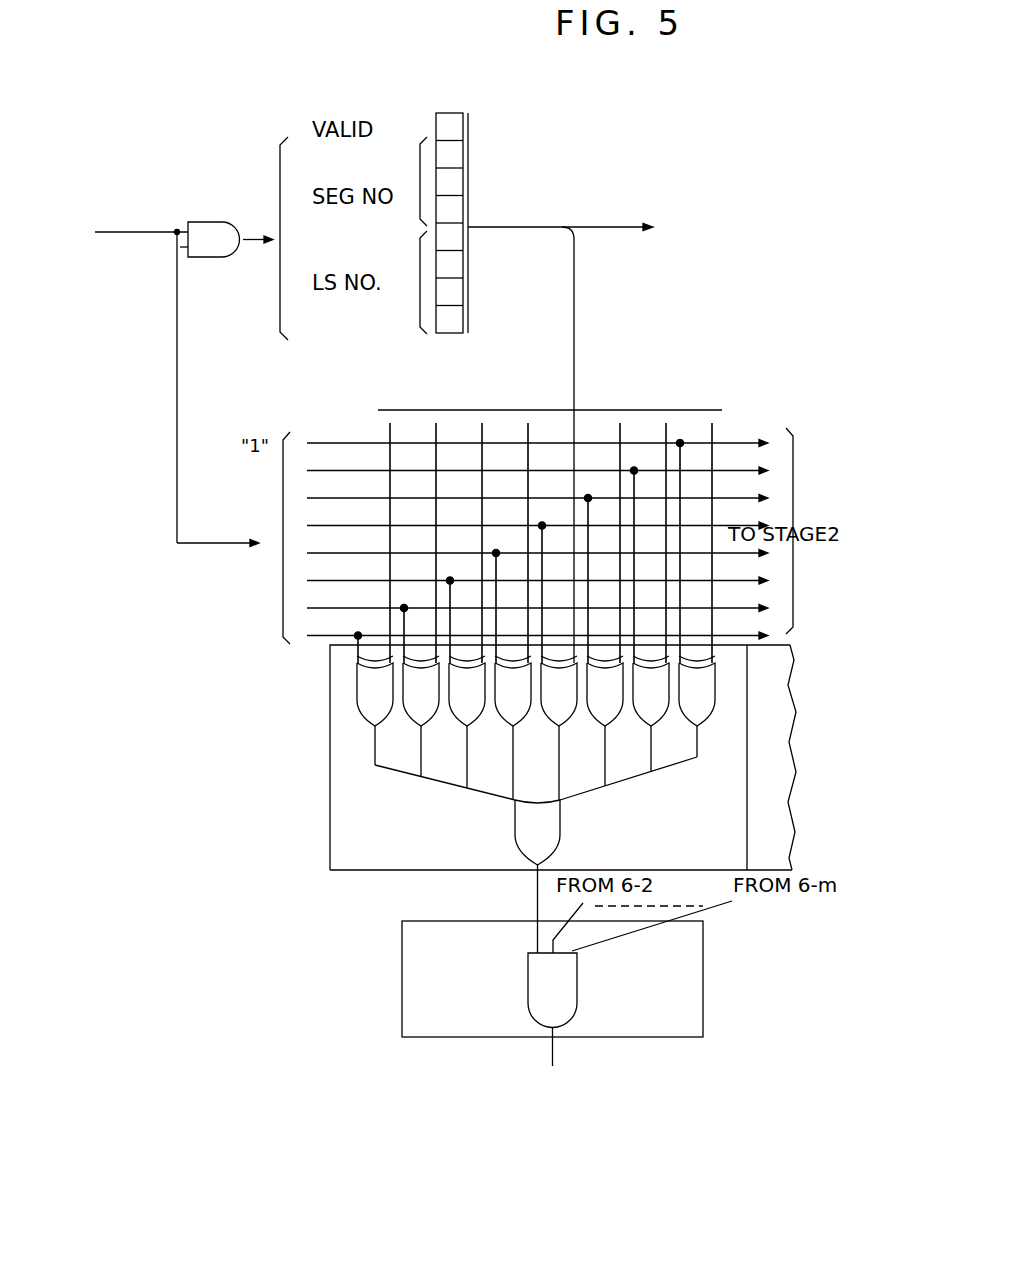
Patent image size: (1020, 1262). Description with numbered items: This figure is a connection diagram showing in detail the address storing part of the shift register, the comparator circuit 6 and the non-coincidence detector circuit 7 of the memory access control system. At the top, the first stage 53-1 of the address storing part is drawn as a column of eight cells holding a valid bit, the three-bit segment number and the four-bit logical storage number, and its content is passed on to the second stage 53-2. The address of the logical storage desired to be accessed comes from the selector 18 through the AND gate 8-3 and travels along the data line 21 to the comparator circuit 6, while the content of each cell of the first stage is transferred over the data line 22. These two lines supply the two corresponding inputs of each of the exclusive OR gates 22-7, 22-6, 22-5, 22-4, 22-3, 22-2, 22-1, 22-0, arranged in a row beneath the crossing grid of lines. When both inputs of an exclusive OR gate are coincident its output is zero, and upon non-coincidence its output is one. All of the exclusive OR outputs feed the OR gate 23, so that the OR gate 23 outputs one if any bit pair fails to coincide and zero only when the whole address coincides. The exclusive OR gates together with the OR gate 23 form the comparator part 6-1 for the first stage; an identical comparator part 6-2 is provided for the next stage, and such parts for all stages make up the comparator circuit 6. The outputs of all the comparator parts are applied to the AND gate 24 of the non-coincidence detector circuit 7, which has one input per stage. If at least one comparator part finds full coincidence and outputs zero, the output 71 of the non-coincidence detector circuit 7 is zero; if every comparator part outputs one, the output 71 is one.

The selector 18 is at (132, 213).
The AND gate 8-3 is at (229, 222).
The data line 21 is at (178, 370).
The first stage of the address storing part 53-1 is at (448, 113).
The second stage of the address storing part 53-2 is at (633, 242).
The data line 22 is at (563, 366).
The exclusive OR gate 22-7 is at (375, 710).
The exclusive OR gate 22-6 is at (421, 716).
The exclusive OR gate 22-5 is at (467, 722).
The exclusive OR gate 22-4 is at (513, 728).
The exclusive OR gate 22-3 is at (559, 728).
The exclusive OR gate 22-2 is at (605, 721).
The exclusive OR gate 22-1 is at (651, 714).
The exclusive OR gate 22-0 is at (697, 706).
The OR gate 23 is at (563, 803).
The comparator circuit 6 is at (311, 780).
The comparator part 6-1 is at (714, 757).
The comparator part 6-2 is at (779, 757).
The non-coincidence detector circuit 7 is at (705, 981).
The AND gate 24 is at (579, 985).
The output 71 is at (556, 1056).